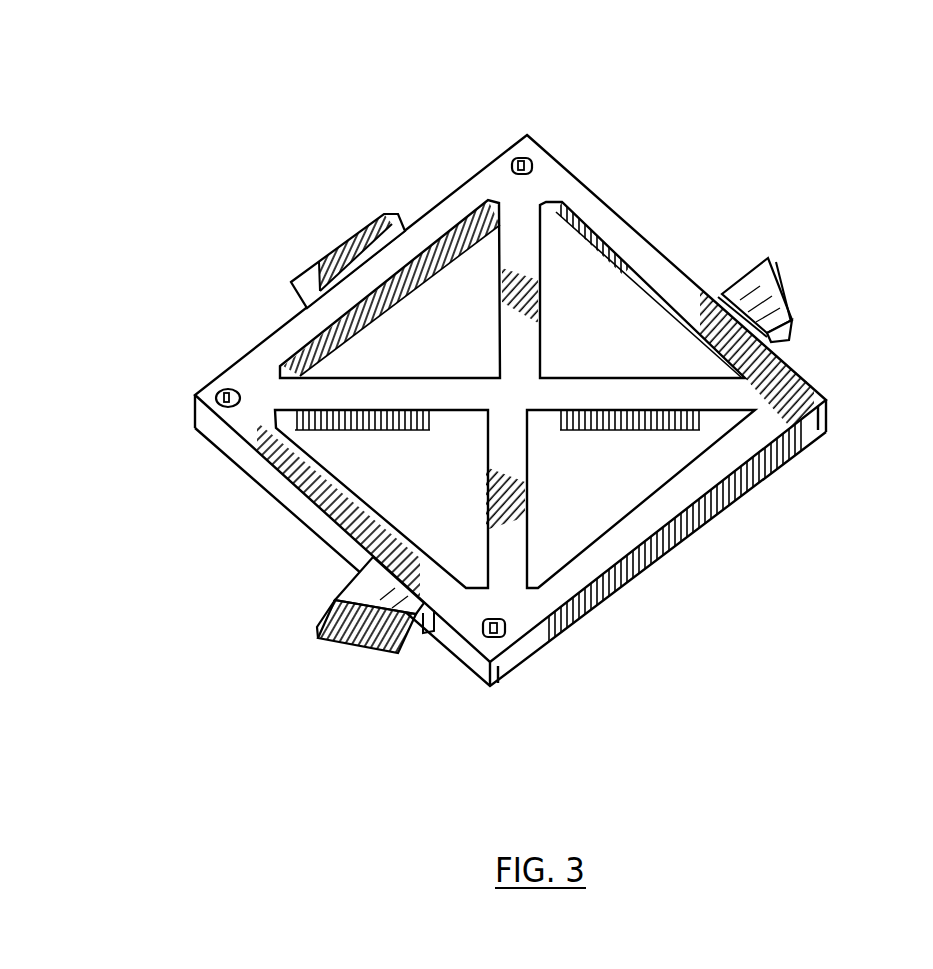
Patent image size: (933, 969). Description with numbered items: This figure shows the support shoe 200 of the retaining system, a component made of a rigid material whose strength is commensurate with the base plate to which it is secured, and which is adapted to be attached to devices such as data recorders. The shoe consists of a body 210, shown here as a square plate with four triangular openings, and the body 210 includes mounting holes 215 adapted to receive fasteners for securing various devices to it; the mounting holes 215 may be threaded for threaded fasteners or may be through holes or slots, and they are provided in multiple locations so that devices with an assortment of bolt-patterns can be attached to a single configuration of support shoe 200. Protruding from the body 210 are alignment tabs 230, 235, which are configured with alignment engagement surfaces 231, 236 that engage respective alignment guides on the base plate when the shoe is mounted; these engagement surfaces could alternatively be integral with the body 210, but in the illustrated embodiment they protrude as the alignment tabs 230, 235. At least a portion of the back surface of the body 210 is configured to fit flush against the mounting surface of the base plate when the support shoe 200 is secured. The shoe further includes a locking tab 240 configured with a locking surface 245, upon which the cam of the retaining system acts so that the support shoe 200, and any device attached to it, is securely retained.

The support shoe 200 is at (490, 405).
The body 210 is at (585, 198).
The mounting holes 215 is at (513, 165).
The alignment tab 230 is at (294, 609).
The alignment engagement surface 231 is at (320, 632).
The alignment tab 235 is at (817, 250).
The alignment engagement surface 236 is at (796, 321).
The locking tab 240 is at (267, 242).
The locking surface 245 is at (322, 247).